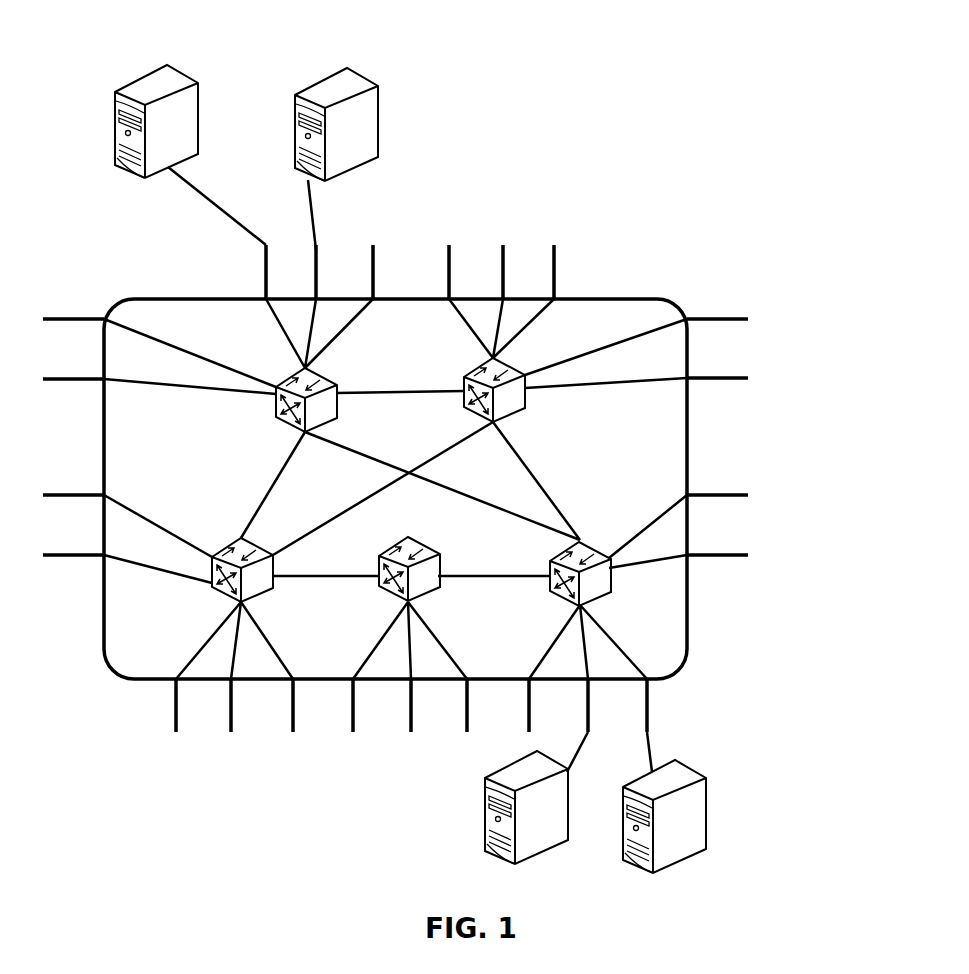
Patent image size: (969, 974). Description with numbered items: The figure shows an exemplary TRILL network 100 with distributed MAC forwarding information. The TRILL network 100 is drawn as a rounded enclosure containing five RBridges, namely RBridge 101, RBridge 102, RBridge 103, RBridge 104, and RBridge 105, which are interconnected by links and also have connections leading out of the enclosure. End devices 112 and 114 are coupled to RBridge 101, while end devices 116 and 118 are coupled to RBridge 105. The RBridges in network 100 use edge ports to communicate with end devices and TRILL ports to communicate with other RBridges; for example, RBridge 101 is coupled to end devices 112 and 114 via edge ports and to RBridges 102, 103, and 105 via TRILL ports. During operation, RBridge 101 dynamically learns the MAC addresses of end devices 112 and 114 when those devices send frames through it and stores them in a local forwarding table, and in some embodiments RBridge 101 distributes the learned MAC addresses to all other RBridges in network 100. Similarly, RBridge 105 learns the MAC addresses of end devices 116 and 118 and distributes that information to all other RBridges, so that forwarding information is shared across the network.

The TRILL network 100 is at (688, 617).
The RBridge 101 is at (280, 423).
The RBridge 102 is at (472, 412).
The RBridge 103 is at (220, 598).
The RBridge 104 is at (382, 595).
The RBridge 105 is at (560, 600).
The end device 112 is at (199, 84).
The end device 114 is at (378, 86).
The end device 116 is at (483, 822).
The end device 118 is at (706, 800).